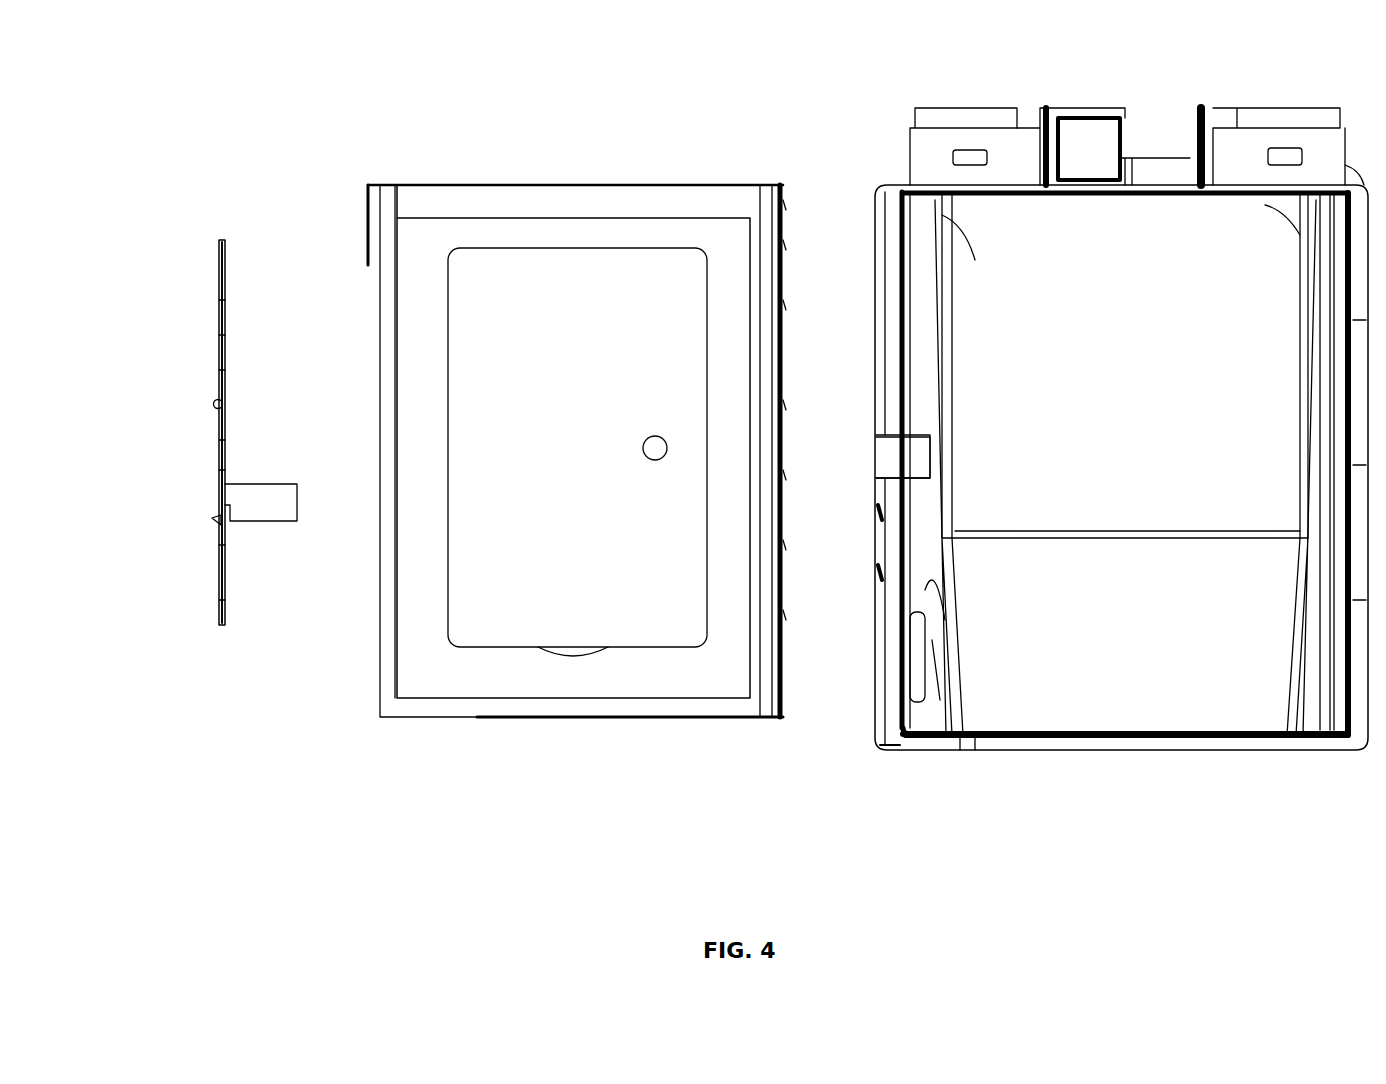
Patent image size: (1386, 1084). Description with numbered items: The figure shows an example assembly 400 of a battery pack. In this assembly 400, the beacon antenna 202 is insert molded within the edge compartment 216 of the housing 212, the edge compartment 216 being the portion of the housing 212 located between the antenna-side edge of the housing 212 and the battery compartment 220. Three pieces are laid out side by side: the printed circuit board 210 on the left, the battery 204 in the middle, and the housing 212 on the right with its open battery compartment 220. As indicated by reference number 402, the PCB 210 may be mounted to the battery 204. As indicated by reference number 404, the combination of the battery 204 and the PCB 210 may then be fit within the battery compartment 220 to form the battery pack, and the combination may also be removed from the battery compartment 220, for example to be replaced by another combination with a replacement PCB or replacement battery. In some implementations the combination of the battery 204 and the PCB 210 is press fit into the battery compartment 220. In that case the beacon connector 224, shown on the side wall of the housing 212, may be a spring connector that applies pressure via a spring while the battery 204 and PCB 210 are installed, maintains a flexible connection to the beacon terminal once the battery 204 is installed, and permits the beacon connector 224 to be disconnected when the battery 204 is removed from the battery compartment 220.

The assembly 400 is at (262, 64).
The PCB mounting step 402 is at (330, 430).
The battery and PCB fitting step 404 is at (975, 403).
The beacon antenna 202 is at (1053, 480).
The battery 204 is at (652, 685).
The printed circuit board 210 is at (225, 625).
The housing 212 is at (1140, 740).
The edge compartment 216 is at (890, 745).
The battery compartment 220 is at (1174, 333).
The beacon connector 224 is at (902, 480).